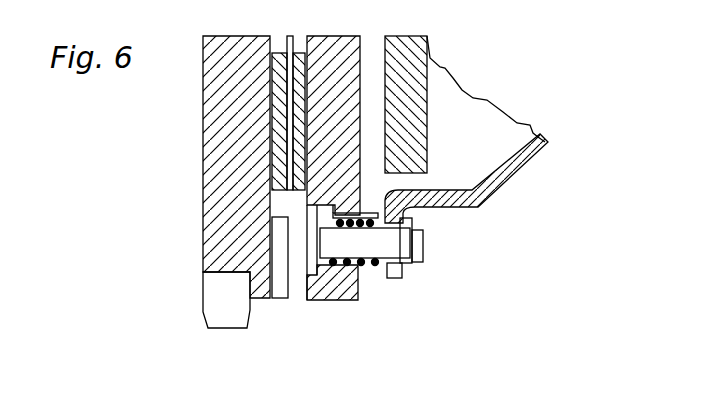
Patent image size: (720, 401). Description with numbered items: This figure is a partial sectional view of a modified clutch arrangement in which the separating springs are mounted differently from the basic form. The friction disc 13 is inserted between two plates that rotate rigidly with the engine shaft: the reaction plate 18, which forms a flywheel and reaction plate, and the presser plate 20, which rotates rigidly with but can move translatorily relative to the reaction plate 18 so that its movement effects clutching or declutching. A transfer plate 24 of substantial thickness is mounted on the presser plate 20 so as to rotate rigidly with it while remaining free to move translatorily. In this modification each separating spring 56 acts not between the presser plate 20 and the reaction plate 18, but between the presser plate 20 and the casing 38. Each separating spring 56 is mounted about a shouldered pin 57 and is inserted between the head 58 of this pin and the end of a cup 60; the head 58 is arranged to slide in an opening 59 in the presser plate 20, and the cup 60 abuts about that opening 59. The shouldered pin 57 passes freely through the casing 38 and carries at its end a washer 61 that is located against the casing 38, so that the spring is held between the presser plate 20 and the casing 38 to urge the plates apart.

The friction disc 13 is at (280, 143).
The reaction plate 18 is at (218, 100).
The presser plate 20 is at (353, 87).
The transfer plate 24 is at (412, 120).
The casing 38 is at (498, 177).
The separating spring 56 is at (371, 273).
The shouldered pin 57 is at (347, 245).
The head 58 is at (312, 262).
The opening 59 is at (325, 278).
The cup 60 is at (370, 210).
The washer 61 is at (415, 267).